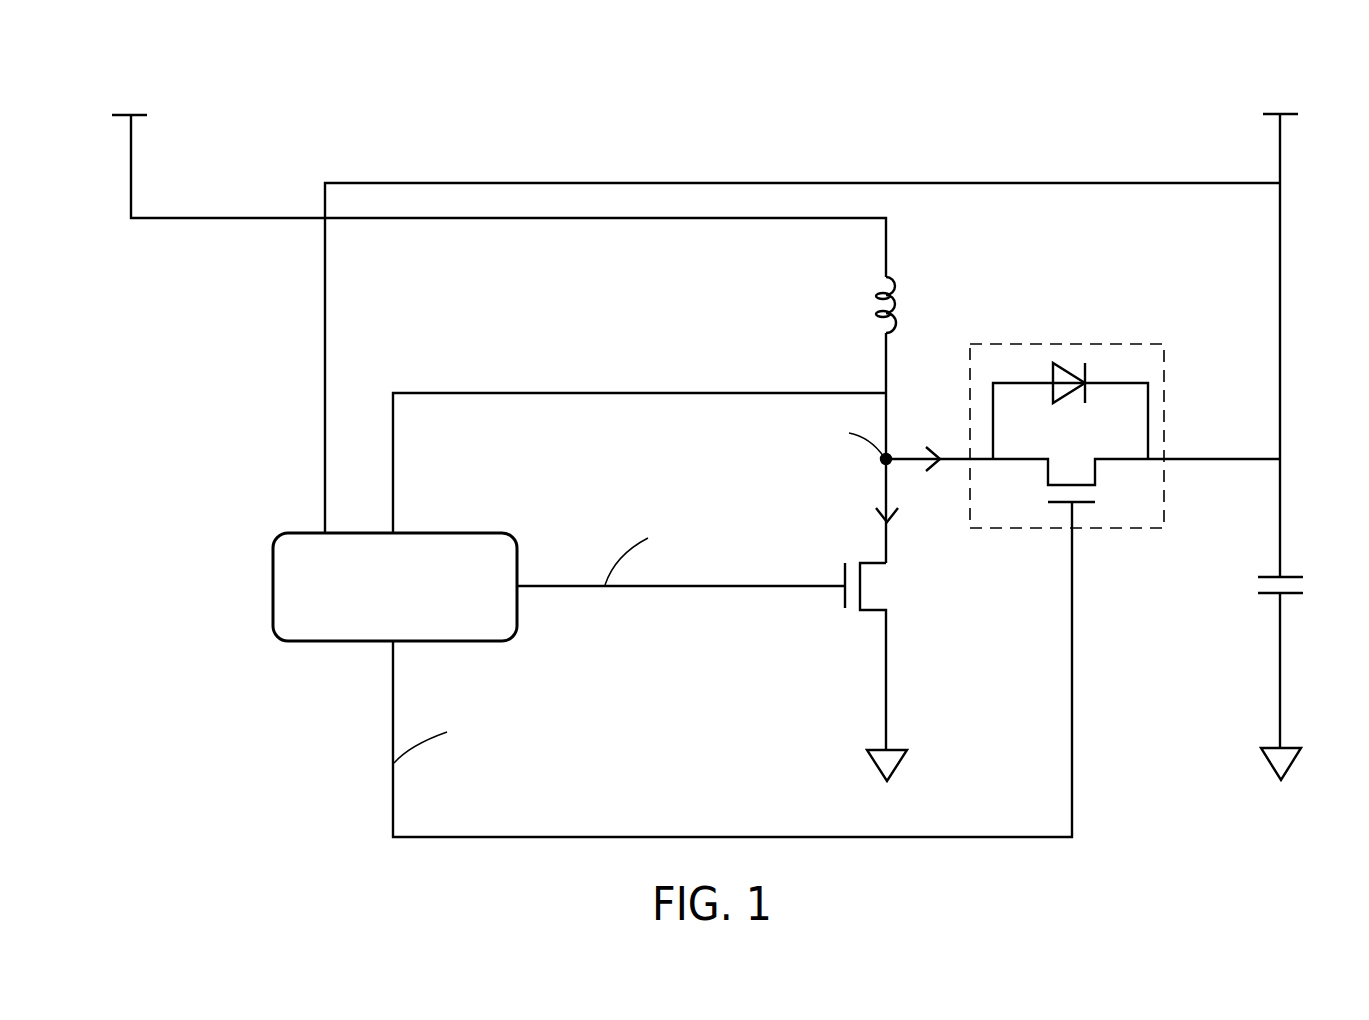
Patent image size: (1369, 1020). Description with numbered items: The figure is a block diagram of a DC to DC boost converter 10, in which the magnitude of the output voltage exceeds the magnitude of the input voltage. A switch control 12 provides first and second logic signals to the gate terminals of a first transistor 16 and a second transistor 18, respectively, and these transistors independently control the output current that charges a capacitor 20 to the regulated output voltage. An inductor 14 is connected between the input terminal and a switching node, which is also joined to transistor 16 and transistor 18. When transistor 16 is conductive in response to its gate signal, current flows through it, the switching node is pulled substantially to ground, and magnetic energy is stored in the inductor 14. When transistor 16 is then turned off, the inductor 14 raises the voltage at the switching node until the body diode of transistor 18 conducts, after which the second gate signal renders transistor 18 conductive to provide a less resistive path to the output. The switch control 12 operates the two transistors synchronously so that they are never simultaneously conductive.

The boost converter 10 is at (255, 781).
The switch control 12 is at (472, 543).
The inductor 14 is at (896, 284).
The transistor 16 is at (877, 608).
The transistor 18 is at (1080, 335).
The capacitor 20 is at (1295, 595).